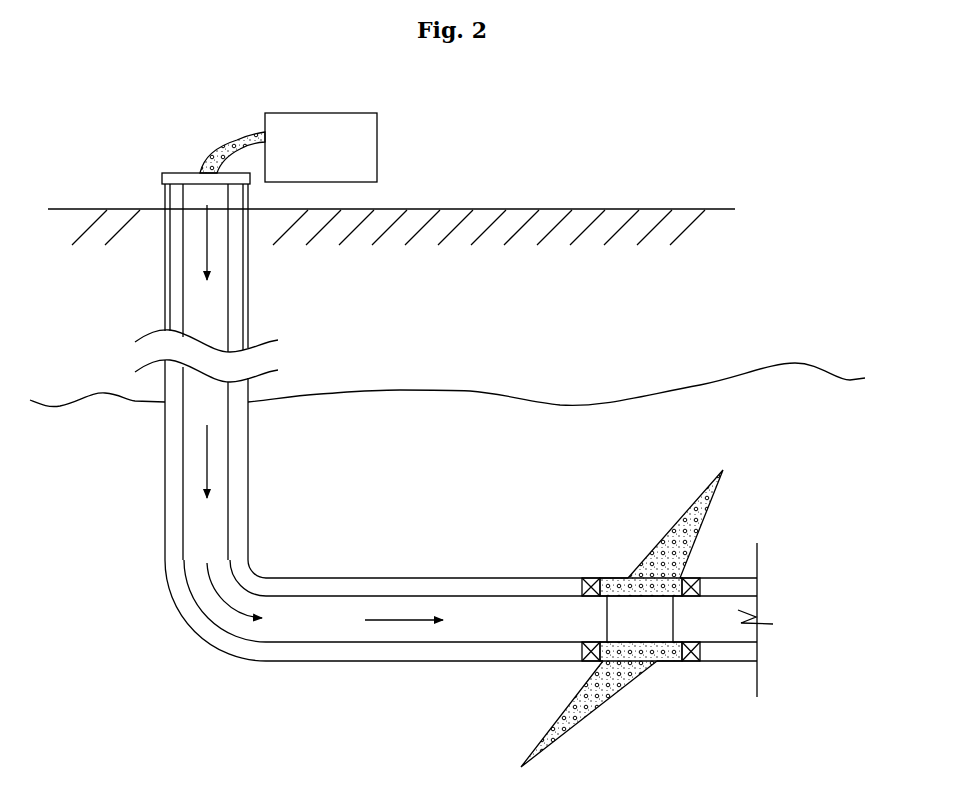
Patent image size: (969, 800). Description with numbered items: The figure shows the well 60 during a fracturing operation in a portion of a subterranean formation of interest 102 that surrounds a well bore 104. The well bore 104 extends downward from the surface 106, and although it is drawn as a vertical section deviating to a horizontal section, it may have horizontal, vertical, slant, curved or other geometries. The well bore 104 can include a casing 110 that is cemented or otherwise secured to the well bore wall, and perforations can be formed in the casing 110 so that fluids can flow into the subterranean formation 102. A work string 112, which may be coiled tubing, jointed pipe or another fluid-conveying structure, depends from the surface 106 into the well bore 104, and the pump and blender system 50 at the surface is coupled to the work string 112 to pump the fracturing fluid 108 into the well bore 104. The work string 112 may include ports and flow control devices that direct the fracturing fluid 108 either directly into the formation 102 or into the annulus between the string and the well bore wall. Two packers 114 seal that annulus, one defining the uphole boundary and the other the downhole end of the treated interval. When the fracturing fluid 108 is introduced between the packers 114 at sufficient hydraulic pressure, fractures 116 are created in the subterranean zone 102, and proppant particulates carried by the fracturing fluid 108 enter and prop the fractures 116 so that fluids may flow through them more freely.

The pump and blender system 50 is at (333, 156).
The well 60 is at (170, 657).
The subterranean formation of interest 102 is at (481, 434).
The well bore 104 is at (175, 290).
The surface 106 is at (555, 210).
The fracturing fluid 108 is at (217, 148).
The casing 110 is at (168, 320).
The work string 112 is at (437, 528).
The packers 114 is at (593, 578).
The fractures 116 is at (660, 528).